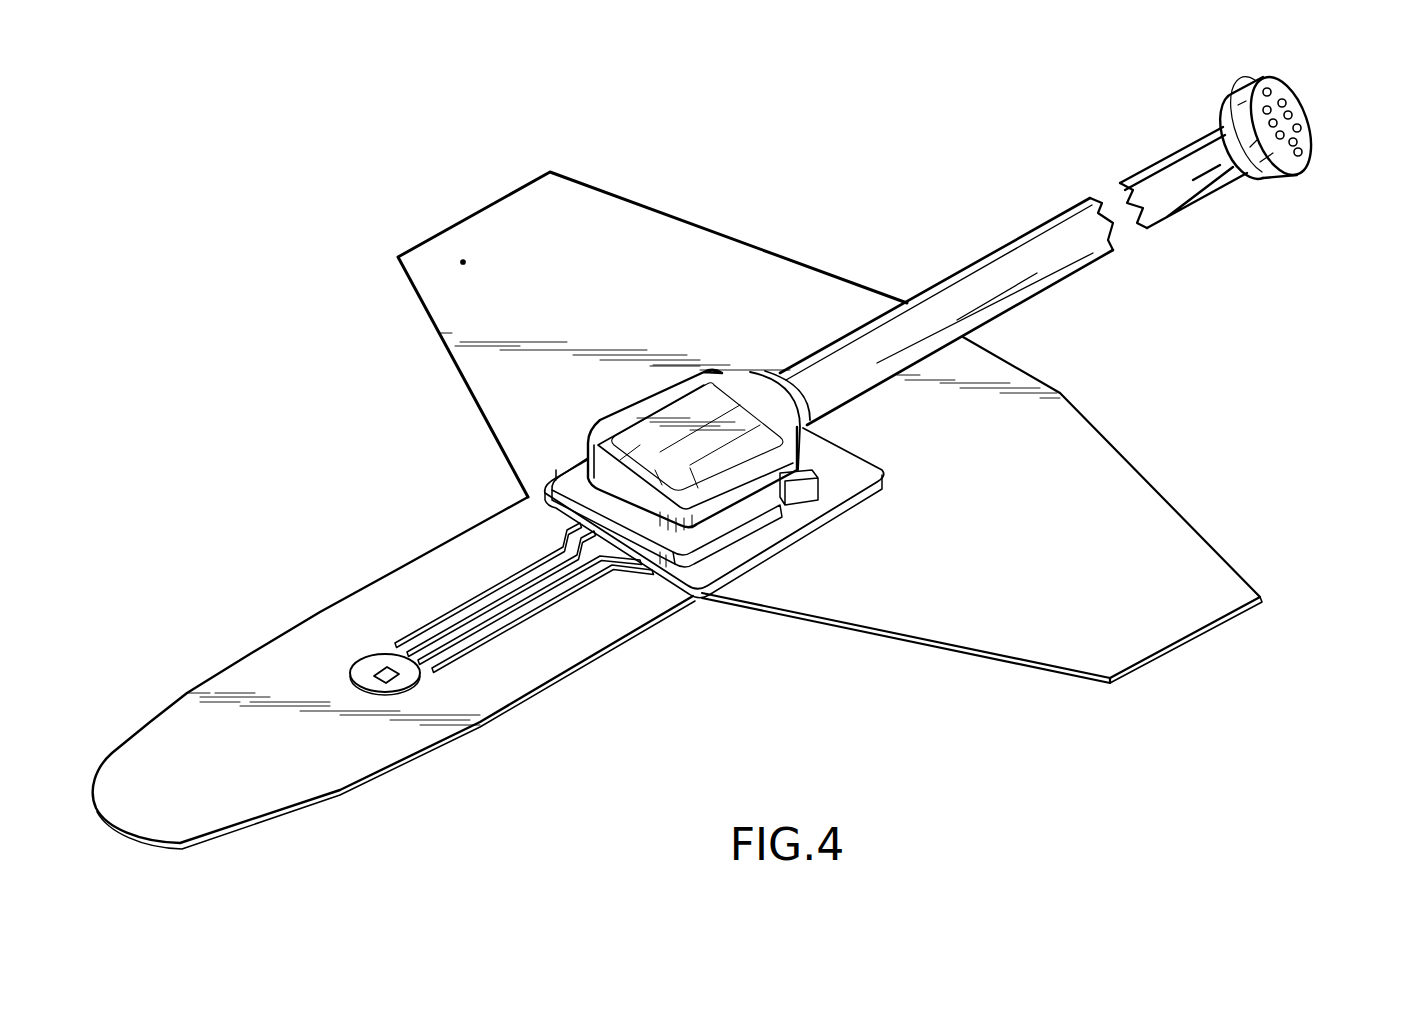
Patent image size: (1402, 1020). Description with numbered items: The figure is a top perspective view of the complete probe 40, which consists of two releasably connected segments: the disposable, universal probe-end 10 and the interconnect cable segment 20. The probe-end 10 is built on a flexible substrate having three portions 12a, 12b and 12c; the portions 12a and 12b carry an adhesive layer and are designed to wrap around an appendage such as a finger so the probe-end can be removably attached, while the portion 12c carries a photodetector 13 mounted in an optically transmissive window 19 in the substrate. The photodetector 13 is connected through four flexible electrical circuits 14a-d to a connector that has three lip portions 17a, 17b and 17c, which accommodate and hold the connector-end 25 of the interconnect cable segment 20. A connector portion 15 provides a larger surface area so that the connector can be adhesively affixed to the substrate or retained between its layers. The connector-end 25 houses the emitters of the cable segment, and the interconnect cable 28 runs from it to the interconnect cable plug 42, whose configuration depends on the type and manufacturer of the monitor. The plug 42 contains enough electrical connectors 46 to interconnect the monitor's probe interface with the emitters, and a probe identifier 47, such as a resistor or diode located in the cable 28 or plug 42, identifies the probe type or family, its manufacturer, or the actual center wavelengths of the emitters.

The probe-end 10 is at (843, 642).
The substrate portion 12a is at (1123, 642).
The substrate portion 12b is at (488, 256).
The substrate portion 12c is at (270, 789).
The photodetector 13 is at (400, 681).
The flexible electrical circuits 14a-d is at (548, 618).
The connector portion 15 is at (865, 472).
The lip portion 17a is at (573, 468).
The lip portion 17b is at (777, 497).
The lip portion 17c is at (597, 497).
The optically transmissive window 19 is at (357, 663).
The interconnect cable segment 20 is at (907, 285).
The connector-end 25 is at (695, 405).
The interconnect cable 28 is at (1022, 237).
The probe 40 is at (1254, 225).
The interconnect cable plug 42 is at (1287, 176).
The electrical connectors 46 is at (1288, 99).
The probe identifier 47 is at (1302, 152).